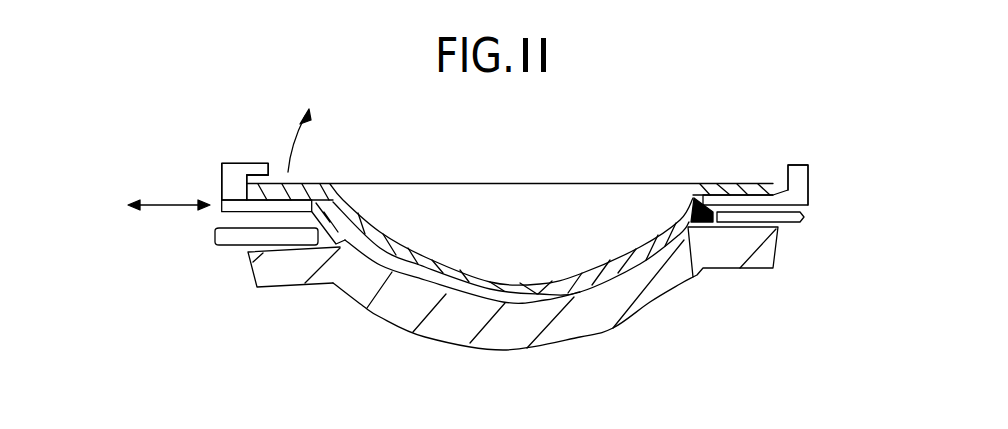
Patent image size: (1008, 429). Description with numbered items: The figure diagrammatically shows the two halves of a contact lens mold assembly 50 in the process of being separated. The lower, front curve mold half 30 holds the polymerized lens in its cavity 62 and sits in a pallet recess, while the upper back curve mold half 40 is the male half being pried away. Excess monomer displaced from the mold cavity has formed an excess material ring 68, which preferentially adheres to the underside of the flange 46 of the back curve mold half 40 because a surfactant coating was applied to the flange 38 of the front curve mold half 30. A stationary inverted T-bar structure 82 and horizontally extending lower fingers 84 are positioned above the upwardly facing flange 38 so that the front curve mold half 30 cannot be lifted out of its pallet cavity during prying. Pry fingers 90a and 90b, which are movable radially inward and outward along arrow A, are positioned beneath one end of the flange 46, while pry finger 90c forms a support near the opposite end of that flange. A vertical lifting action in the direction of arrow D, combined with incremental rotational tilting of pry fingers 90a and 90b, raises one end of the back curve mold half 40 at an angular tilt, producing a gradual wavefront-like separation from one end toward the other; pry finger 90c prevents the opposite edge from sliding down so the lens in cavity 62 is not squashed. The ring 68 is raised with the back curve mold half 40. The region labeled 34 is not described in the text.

The front curve mold half 30 is at (597, 336).
The side wall portion 34 is at (693, 277).
The flange 38 is at (278, 292).
The back curve mold half 40 is at (666, 186).
The flange 46 is at (252, 184).
The mold assembly 50 is at (503, 184).
The cavity 62 is at (390, 315).
The excess material ring 68 is at (353, 188).
The inverted T-bar structure 82 is at (803, 224).
The lower fingers 84 is at (216, 236).
The pry finger 90a is at (222, 185).
The pry finger 90b is at (245, 181).
The pry finger 90c is at (809, 181).